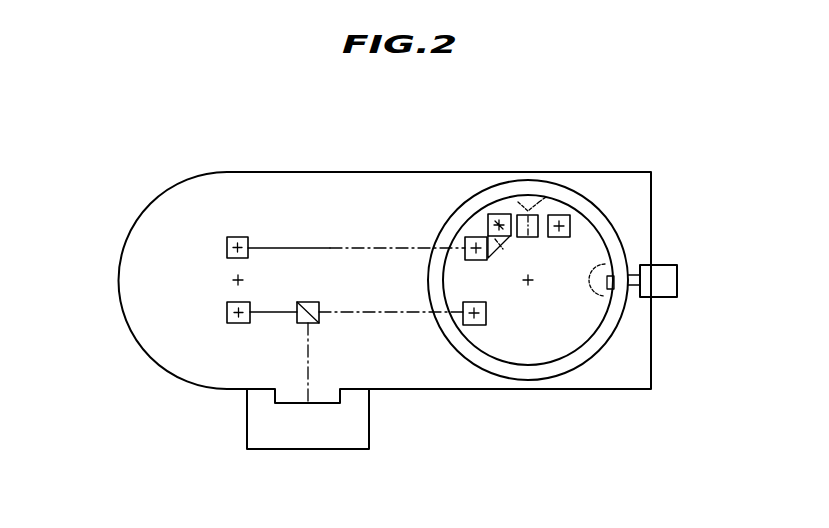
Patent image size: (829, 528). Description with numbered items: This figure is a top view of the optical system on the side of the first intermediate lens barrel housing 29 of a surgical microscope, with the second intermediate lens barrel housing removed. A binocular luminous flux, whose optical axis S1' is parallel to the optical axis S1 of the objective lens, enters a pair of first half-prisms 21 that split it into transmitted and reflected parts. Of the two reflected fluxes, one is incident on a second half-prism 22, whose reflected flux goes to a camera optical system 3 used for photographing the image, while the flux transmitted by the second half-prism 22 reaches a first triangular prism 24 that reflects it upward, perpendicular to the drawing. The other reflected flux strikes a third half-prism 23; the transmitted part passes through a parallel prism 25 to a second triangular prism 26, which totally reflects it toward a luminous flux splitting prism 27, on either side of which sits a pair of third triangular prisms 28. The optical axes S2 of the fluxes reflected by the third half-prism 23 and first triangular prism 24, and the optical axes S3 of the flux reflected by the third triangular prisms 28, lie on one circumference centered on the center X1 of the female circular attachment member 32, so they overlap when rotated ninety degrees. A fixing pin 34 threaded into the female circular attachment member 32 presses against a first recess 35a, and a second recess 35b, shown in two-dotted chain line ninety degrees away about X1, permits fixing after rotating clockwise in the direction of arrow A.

The camera optical system 3 is at (247, 438).
The pair of first half-prisms 21 is at (228, 240).
The second half-prism 22 is at (298, 322).
The third half-prism 23 is at (467, 238).
The first triangular prism 24 is at (476, 326).
The parallel prism 25 is at (497, 258).
The second triangular prism 26 is at (535, 238).
The luminous flux splitting prism 27 is at (592, 345).
The pair of third triangular prisms 28 is at (496, 215).
The first intermediate lens barrel housing 29 is at (651, 190).
The female circular attachment member 32 is at (617, 320).
The fixing pin 34 is at (677, 281).
The first recess 35a is at (613, 264).
The second recess 35b is at (547, 196).
The optical axis of the objective lens S1 is at (269, 202).
The optical axis of the binocular luminous flux S1' is at (148, 280).
The optical axis of the reflected luminous fluxes S2 is at (474, 249).
The optical axis of the pupil-split binocular luminous flux S3 is at (497, 224).
The center of the female attachment member X1 is at (530, 284).
The rotation direction arrow A is at (637, 245).